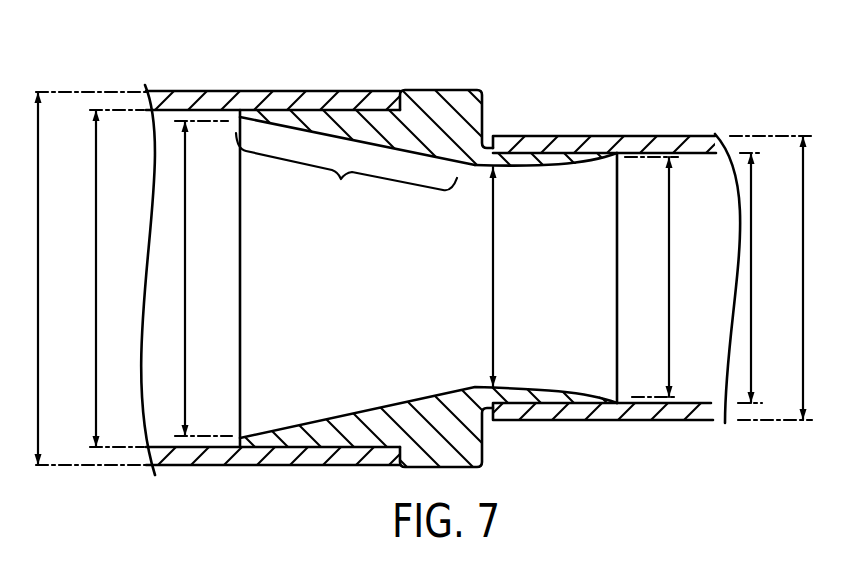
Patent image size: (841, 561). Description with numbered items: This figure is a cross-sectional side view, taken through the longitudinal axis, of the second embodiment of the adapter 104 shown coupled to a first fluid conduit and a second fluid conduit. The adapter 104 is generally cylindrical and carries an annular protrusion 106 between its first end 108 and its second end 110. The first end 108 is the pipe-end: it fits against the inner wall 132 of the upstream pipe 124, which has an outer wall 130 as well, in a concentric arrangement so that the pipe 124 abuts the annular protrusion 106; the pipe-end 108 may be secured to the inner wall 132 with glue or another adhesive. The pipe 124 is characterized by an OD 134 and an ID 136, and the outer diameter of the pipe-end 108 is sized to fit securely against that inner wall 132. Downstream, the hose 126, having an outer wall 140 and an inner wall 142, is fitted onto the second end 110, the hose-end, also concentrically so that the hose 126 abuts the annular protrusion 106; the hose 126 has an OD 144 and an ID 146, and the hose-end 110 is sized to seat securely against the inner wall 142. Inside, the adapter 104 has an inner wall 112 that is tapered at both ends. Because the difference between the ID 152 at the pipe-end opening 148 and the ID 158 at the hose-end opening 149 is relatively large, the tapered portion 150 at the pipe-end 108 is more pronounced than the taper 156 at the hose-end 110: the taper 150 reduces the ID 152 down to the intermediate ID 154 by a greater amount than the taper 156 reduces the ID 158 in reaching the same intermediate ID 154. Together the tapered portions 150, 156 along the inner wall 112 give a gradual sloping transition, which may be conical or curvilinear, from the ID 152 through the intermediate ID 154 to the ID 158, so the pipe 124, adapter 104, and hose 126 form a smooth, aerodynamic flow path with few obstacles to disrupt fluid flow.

The adapter 104 is at (410, 42).
The annular protrusion 106 is at (453, 90).
The first end 108 is at (314, 450).
The second end 110 is at (553, 403).
The inner wall 112 is at (356, 410).
The pipe 124 is at (203, 66).
The hose 126 is at (705, 112).
The outer wall 130 is at (178, 467).
The inner wall 132 is at (149, 448).
The OD 134 is at (40, 268).
The ID 136 is at (97, 278).
The outer wall 140 is at (628, 134).
The inner wall 142 is at (698, 401).
The OD 144 is at (803, 282).
The ID 146 is at (751, 276).
The opening 148 is at (233, 124).
The opening 149 is at (628, 162).
The tapered portion 150 is at (355, 165).
The ID 152 is at (185, 276).
The intermediate ID 154 is at (493, 280).
The taper 156 is at (593, 172).
The ID 158 is at (669, 276).